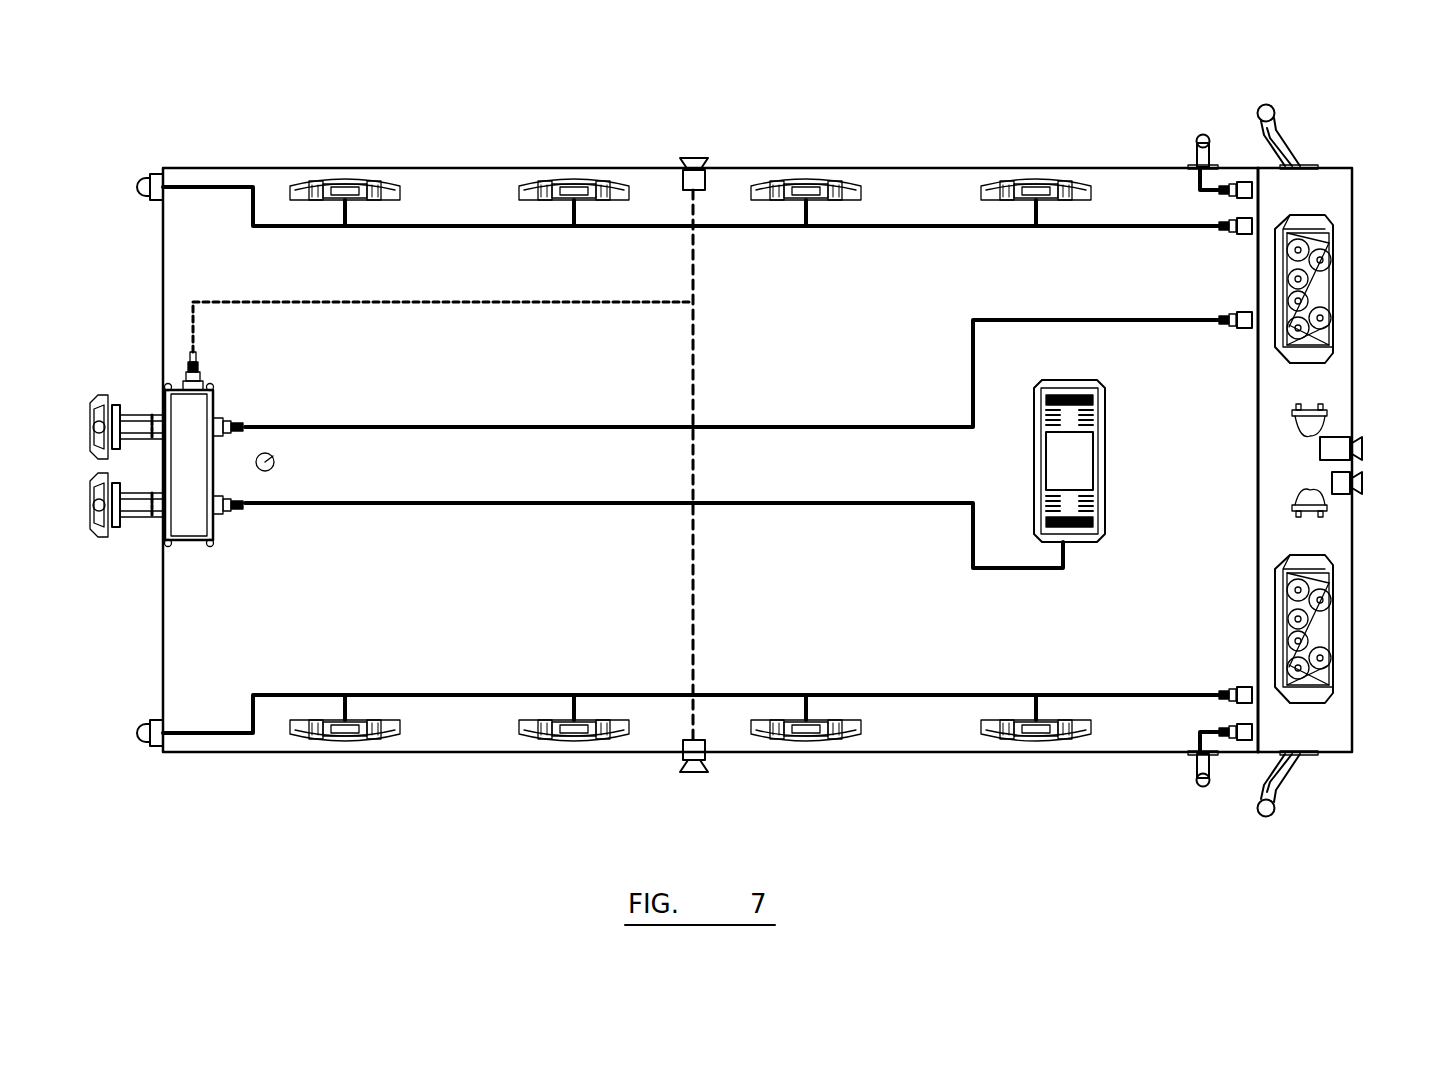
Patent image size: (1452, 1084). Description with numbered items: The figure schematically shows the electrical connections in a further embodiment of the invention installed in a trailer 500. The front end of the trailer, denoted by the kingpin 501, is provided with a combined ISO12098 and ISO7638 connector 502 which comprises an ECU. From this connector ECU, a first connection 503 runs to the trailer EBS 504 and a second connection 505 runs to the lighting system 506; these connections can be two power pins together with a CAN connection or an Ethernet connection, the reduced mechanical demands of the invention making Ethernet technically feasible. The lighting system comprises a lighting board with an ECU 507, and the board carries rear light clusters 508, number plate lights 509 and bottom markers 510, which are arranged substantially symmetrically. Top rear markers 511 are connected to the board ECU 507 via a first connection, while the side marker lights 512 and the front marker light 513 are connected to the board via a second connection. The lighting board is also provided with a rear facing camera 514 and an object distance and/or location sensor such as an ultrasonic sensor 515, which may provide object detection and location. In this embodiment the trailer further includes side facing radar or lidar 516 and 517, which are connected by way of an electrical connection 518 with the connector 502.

The trailer 500 is at (510, 775).
The kingpin 501 is at (275, 462).
The combined ISO12098 and ISO7638 connector 502 is at (168, 378).
The first connection 503 is at (590, 504).
The trailer EBS 504 is at (1106, 462).
The second connection 505 is at (570, 426).
The lighting system 506 is at (1256, 281).
The ECU of lighting board 507 is at (1275, 540).
The rear light clusters 508 is at (1333, 272).
The number plate lights 509 is at (1312, 404).
The bottom markers 510 is at (1275, 110).
The top rear markers 511 is at (1198, 139).
The side marker lights 512 is at (347, 176).
The front marker light 513 is at (142, 186).
The rear facing camera 514 is at (1350, 440).
The ultrasonic sensor 515 is at (1348, 490).
The side facing radar or lidar 516 is at (694, 157).
The side facing radar or lidar 517 is at (697, 770).
The electrical connection 518 is at (696, 305).